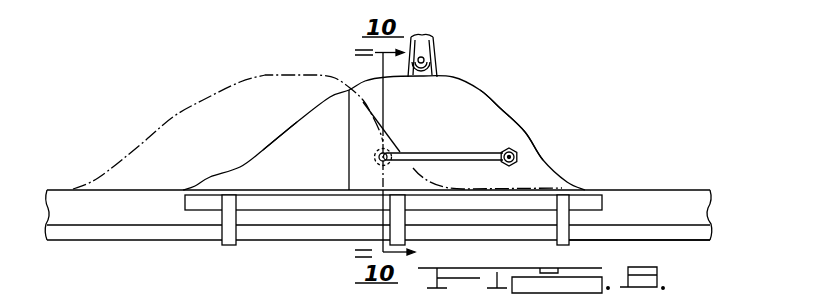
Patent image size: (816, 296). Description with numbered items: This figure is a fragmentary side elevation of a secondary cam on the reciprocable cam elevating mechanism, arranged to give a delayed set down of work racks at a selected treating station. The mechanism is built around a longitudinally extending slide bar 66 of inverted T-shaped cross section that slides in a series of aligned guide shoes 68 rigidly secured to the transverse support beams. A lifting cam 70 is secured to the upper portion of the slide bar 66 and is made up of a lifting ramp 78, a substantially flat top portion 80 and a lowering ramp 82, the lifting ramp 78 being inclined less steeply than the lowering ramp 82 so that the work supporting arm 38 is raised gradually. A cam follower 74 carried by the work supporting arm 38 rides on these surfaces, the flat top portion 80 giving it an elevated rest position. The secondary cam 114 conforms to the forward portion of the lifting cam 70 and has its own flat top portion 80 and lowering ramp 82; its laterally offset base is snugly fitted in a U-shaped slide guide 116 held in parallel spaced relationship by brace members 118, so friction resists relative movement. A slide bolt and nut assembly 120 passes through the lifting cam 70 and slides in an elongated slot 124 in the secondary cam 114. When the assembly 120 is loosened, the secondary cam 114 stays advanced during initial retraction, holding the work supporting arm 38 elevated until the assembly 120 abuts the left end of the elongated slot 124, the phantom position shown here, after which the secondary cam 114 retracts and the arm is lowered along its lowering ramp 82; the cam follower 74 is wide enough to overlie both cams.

The work supporting arm 38 is at (437, 36).
The slide bar 66 is at (642, 190).
The guide shoes 68 is at (690, 240).
The lifting cam 70 is at (206, 106).
The cam follower 74 is at (438, 67).
The lifting ramp 78 is at (270, 138).
The flat top portion 80 is at (447, 76).
The lowering ramp 82 is at (525, 132).
The secondary cam 114 is at (488, 115).
The slide guide 116 is at (277, 198).
The brace members 118 is at (228, 220).
The slide bolt and nut assembly 120 is at (372, 142).
The elongated slot 124 is at (433, 154).